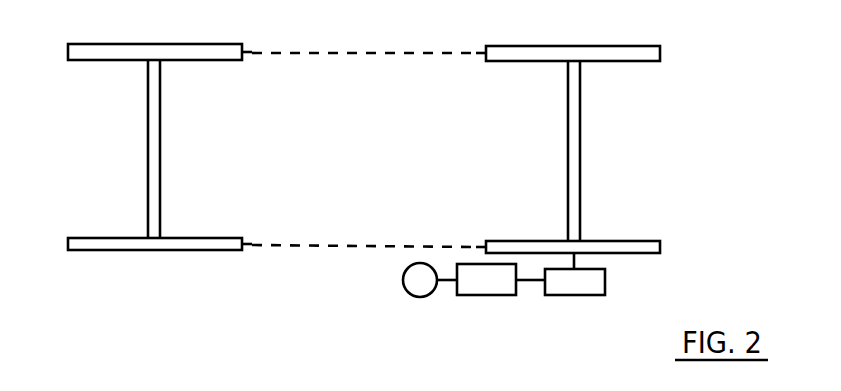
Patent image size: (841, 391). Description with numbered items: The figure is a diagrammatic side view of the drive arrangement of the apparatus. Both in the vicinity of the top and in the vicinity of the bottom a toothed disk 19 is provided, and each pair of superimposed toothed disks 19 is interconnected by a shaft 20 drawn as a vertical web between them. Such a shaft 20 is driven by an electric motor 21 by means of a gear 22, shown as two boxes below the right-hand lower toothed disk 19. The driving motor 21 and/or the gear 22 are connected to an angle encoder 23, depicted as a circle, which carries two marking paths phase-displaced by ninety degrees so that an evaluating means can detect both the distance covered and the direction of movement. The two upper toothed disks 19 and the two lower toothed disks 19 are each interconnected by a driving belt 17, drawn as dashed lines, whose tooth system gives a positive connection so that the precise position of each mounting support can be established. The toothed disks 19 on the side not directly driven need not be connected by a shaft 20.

The driving belt 17 is at (312, 53).
The toothed disk 19 is at (132, 53).
The shaft 20 is at (158, 173).
The electric motor 21 is at (497, 286).
The gear 22 is at (597, 283).
The angle encoder 23 is at (415, 284).